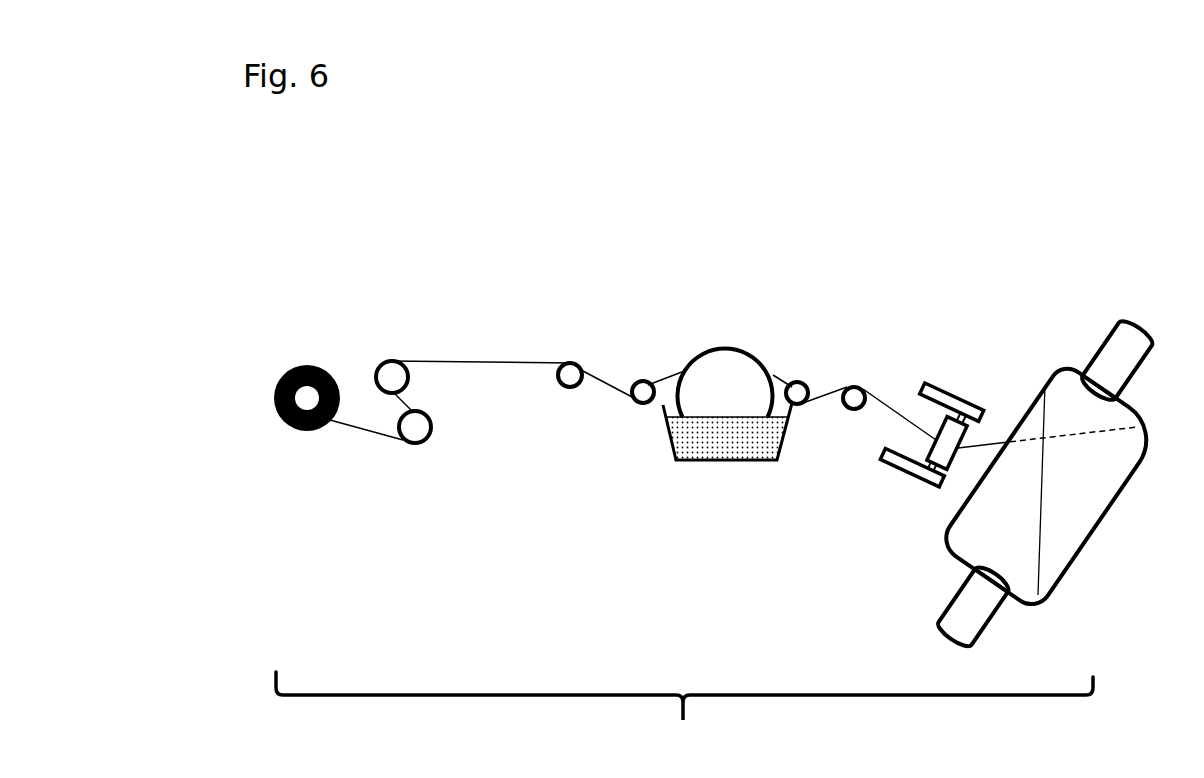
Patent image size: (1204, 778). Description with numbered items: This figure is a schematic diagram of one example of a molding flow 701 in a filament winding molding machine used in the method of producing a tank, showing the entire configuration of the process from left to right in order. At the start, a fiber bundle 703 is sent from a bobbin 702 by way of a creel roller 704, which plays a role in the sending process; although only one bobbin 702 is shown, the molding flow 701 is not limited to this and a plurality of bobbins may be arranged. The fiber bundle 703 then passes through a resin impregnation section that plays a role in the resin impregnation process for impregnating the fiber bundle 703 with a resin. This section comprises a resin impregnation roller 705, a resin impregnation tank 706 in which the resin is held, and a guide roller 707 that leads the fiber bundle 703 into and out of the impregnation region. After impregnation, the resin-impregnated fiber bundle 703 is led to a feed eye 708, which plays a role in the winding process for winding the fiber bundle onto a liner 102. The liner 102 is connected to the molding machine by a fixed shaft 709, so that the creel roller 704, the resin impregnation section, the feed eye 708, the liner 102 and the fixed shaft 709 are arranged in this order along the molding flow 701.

The molding flow 701 is at (684, 720).
The bobbin 702 is at (297, 357).
The fiber bundle 703 is at (502, 353).
The creel roller 704 is at (388, 360).
The resin impregnation roller 705 is at (705, 352).
The resin impregnation tank 706 is at (700, 468).
The guide roller 707 is at (637, 383).
The feed eye 708 is at (925, 382).
The liner 102 is at (1012, 385).
The fixed shaft 709 is at (1097, 357).